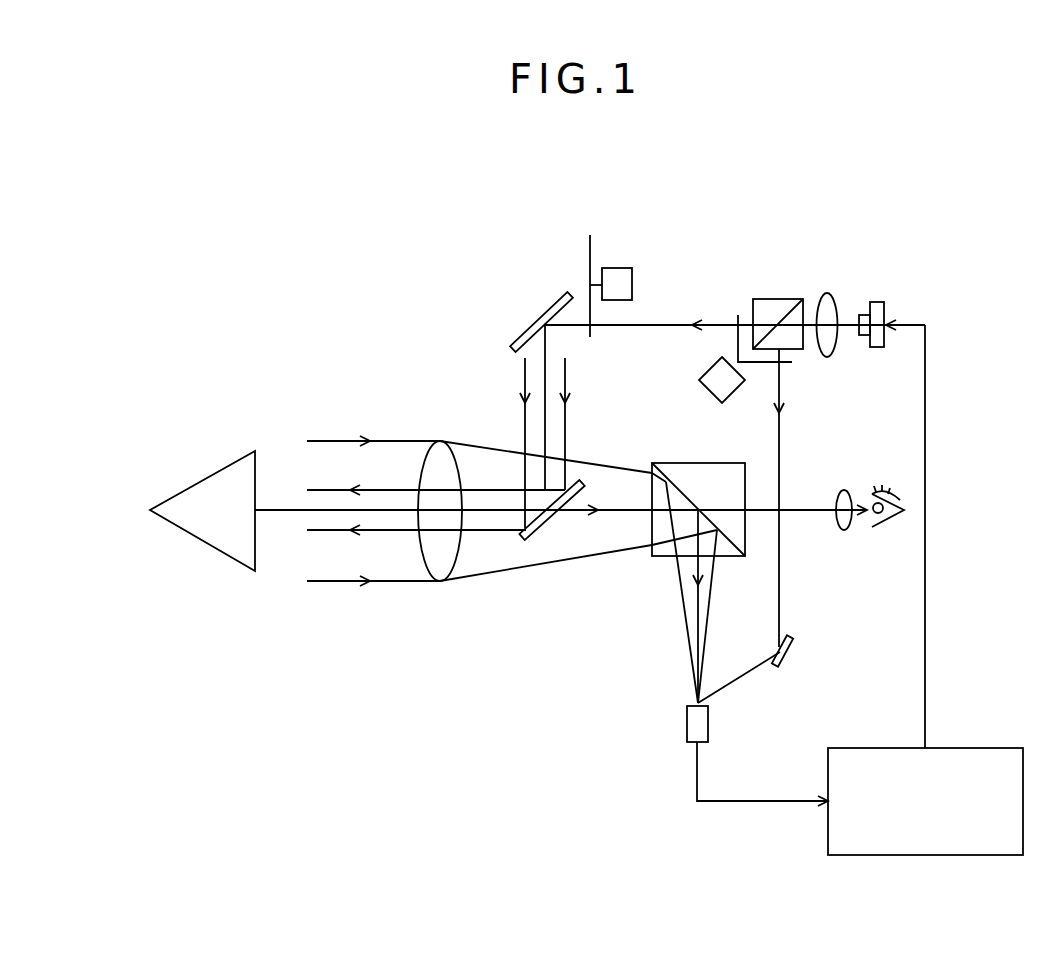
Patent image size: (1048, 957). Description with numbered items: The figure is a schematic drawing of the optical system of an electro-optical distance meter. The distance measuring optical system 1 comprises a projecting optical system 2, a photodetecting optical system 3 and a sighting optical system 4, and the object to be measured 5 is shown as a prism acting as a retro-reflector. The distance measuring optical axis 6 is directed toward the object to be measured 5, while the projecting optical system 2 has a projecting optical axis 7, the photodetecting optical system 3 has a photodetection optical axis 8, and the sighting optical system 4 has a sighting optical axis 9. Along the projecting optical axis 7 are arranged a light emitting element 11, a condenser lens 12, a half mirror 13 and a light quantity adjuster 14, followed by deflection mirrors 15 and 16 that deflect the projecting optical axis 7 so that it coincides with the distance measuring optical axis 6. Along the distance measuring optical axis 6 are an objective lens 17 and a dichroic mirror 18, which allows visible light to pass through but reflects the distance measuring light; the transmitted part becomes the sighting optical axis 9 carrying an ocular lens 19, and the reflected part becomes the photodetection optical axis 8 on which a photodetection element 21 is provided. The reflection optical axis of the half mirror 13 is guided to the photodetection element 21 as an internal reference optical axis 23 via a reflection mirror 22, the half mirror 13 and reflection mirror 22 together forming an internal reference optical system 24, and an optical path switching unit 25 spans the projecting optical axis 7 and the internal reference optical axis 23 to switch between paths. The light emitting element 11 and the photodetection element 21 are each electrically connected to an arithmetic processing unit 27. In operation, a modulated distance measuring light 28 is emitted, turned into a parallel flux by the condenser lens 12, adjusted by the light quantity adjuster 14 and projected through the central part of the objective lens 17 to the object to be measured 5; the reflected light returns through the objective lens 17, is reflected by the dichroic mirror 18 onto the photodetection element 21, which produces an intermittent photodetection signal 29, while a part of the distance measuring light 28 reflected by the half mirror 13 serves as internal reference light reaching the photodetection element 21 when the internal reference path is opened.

The distance measuring optical system 1 is at (425, 273).
The projecting optical system 2 is at (725, 255).
The photodetecting optical system 3 is at (628, 577).
The sighting optical system 4 is at (830, 478).
The object to be measured 5 is at (202, 477).
The distance measuring optical axis 6 is at (283, 510).
The projecting optical axis 7 is at (650, 325).
The photodetection optical axis 8 is at (702, 607).
The sighting optical axis 9 is at (797, 510).
The light emitting element 11 is at (884, 305).
The condenser lens 12 is at (827, 293).
The half mirror 13 is at (783, 299).
The light quantity adjuster 14 is at (623, 268).
The deflection mirror 15 is at (552, 302).
The deflection mirror 16 is at (540, 532).
The objective lens 17 is at (460, 562).
The dichroic mirror 18 is at (677, 463).
The ocular lens 19 is at (843, 528).
The photodetection element 21 is at (710, 725).
The reflection mirror 22 is at (788, 650).
The internal reference optical axis 23 is at (782, 545).
The internal reference optical system 24 is at (793, 592).
The optical path switching unit 25 is at (703, 371).
The arithmetic processing unit 27 is at (957, 748).
The distance measuring light 28 is at (373, 491).
The photodetection signal 29 is at (760, 803).